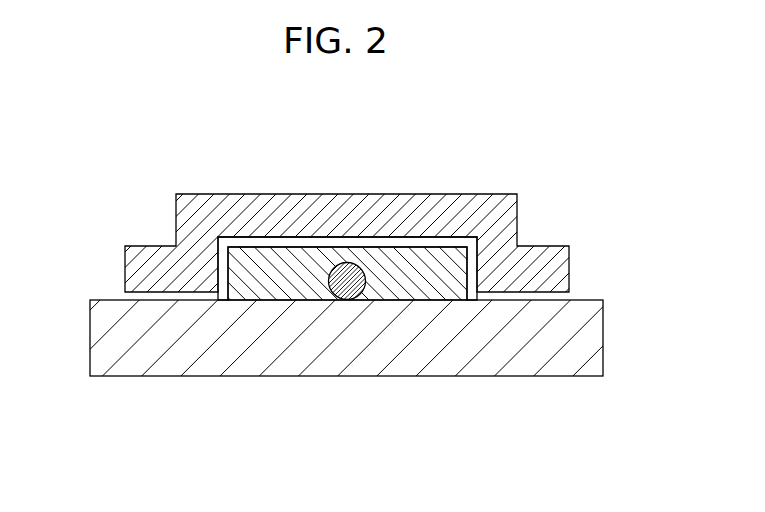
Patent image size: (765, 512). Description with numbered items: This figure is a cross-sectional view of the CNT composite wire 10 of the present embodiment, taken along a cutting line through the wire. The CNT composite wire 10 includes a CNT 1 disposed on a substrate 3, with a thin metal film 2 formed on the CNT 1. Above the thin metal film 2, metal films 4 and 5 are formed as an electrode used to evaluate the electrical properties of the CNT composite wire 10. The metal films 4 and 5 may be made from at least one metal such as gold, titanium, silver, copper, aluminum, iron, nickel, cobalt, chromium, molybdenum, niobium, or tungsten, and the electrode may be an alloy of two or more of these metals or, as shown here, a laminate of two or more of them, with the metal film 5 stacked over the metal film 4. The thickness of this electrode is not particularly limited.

The CNT 1 is at (342, 303).
The thin metal film 2 is at (410, 303).
The substrate 3 is at (168, 362).
The metal film 4 is at (472, 238).
The metal film 5 is at (432, 206).
The CNT composite wire 10 is at (437, 418).